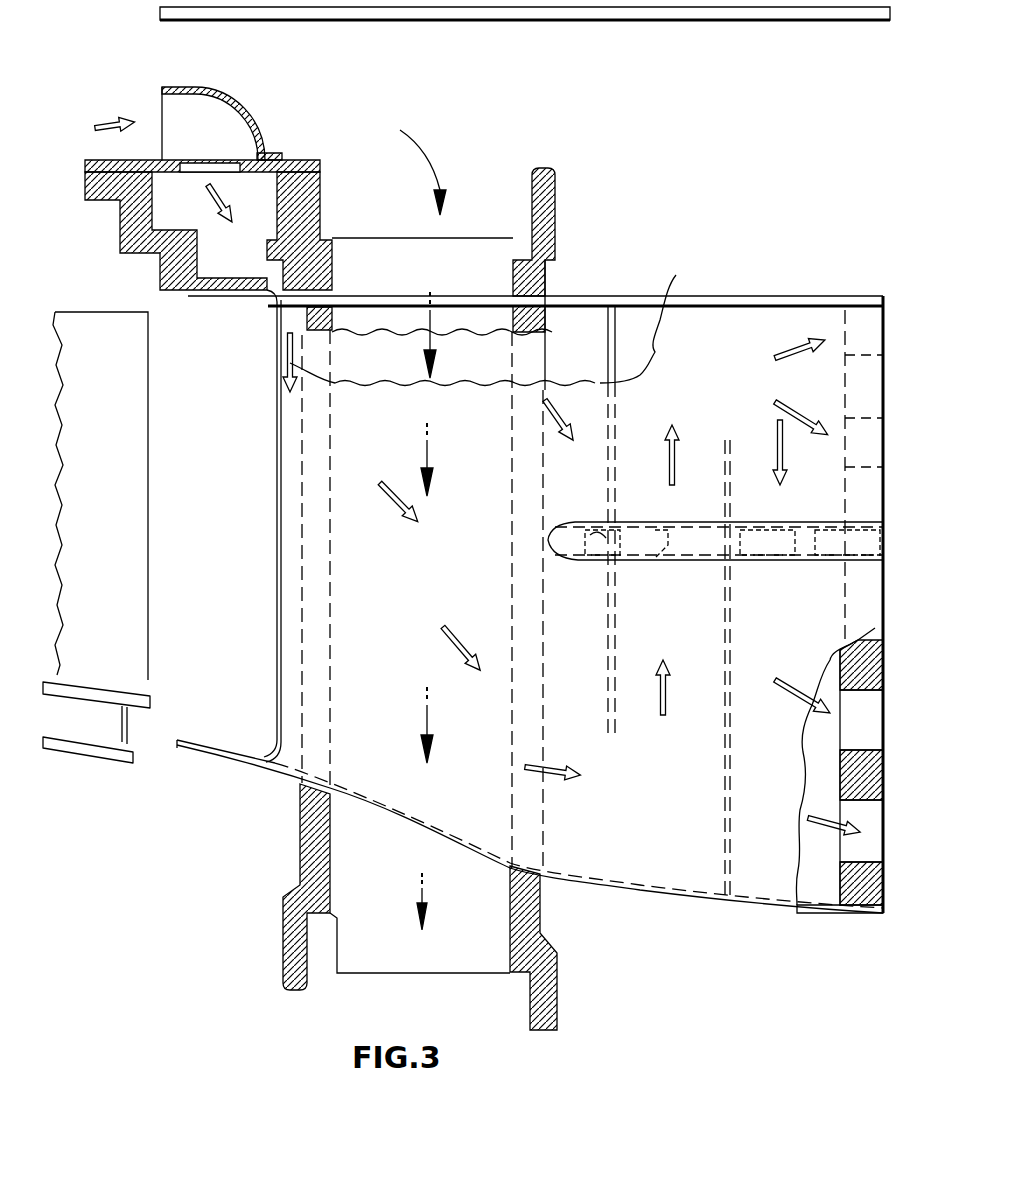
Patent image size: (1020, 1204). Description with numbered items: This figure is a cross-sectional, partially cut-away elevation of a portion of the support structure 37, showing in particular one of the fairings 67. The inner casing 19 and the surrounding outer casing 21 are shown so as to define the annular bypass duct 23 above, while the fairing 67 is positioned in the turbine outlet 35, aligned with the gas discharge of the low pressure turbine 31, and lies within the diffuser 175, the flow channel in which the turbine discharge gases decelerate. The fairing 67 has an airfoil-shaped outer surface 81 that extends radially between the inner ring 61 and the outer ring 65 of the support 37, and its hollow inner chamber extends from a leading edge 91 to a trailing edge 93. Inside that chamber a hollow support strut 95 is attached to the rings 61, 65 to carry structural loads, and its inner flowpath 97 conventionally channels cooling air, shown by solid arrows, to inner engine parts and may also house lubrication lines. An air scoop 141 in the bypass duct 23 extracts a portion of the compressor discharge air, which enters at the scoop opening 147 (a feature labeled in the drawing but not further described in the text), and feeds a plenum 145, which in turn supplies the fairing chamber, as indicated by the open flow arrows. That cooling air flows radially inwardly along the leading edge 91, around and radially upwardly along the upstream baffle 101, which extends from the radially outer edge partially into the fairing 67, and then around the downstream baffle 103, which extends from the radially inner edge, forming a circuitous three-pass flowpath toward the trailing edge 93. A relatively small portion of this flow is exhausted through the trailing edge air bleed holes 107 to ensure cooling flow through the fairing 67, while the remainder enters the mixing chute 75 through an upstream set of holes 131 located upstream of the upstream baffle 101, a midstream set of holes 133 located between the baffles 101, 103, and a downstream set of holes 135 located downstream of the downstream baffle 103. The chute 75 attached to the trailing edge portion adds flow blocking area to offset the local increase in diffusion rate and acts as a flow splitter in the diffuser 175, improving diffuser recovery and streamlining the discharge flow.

The inner casing 19 is at (112, 195).
The outer casing 21 is at (490, 16).
The bypass air duct 23 is at (562, 99).
The low pressure turbine 31 is at (112, 521).
The turbine outlet 35 is at (222, 501).
The support structure 37 is at (268, 789).
The inner ring 61 is at (540, 913).
The outer ring 65 is at (557, 228).
The fairing 67 is at (270, 578).
The mixing chute 75 is at (783, 522).
The outer surface 81 is at (493, 319).
The leading edge 91 is at (276, 655).
The trailing edge 93 is at (880, 880).
The support strut 95 is at (340, 310).
The inner flowpath 97 is at (495, 316).
The upstream baffle 101 is at (612, 646).
The downstream baffle 103 is at (722, 767).
The air bleed holes 107 is at (900, 348).
The upstream set of holes 131 is at (598, 520).
The midstream set of holes 133 is at (653, 562).
The downstream set of holes 135 is at (755, 560).
The air scoop 141 is at (248, 113).
The plenum 145 is at (272, 208).
The inlet opening 147 is at (160, 108).
The diffuser 175 is at (727, 910).